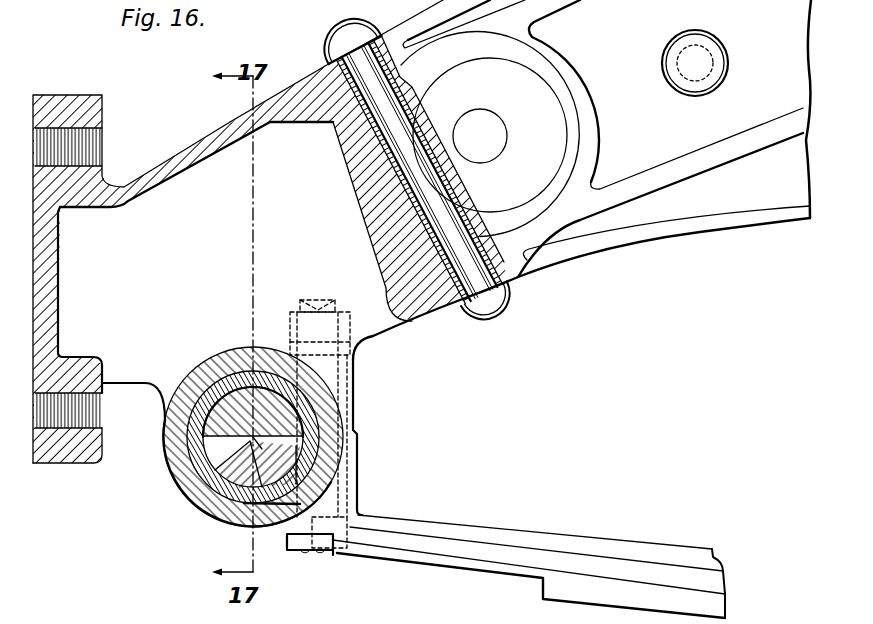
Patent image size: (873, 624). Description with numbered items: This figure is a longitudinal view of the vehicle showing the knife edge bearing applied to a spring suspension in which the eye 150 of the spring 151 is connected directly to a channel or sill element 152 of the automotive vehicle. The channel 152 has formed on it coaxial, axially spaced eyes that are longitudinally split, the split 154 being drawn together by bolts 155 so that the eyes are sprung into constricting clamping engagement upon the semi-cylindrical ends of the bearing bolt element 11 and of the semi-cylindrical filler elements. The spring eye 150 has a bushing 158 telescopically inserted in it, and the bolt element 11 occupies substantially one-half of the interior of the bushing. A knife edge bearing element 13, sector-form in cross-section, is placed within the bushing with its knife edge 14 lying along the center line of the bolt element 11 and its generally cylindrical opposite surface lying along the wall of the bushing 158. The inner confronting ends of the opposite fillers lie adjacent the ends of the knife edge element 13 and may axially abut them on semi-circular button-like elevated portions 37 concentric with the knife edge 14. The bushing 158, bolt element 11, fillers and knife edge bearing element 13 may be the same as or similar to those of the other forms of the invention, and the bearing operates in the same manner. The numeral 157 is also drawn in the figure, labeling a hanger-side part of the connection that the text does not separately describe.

The bolt element 11 is at (217, 364).
The knife edge bearing element 13 is at (218, 510).
The knife edge 14 is at (240, 527).
The button-like elevated portions 37 is at (262, 443).
The spring eye 150 is at (186, 490).
The spring 151 is at (494, 527).
The channel or sill element 152 is at (644, 235).
The split 154 is at (352, 436).
The bolts 155 is at (311, 552).
The flange bracket 157 is at (183, 151).
The bushing 158 is at (206, 497).